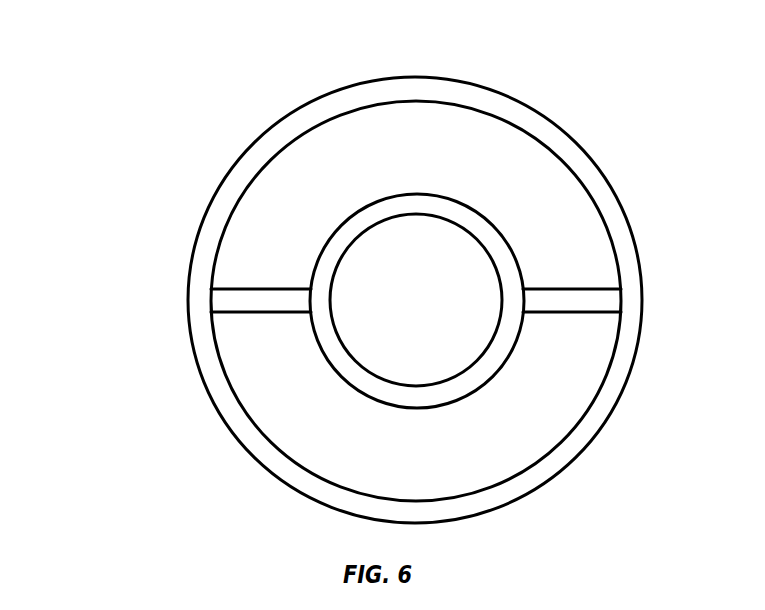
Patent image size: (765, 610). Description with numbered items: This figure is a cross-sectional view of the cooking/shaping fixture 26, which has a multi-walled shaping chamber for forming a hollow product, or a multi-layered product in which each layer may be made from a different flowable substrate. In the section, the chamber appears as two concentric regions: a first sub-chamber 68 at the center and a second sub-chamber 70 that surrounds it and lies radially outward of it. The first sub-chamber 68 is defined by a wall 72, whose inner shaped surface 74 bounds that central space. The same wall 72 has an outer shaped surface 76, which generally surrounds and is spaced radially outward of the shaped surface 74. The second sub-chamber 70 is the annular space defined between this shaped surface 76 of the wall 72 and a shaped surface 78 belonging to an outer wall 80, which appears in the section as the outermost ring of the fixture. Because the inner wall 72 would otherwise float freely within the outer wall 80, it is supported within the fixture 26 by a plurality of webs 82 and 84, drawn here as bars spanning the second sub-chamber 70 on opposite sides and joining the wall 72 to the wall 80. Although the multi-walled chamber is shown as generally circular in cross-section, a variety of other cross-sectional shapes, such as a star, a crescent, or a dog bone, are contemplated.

The fixture 26 is at (115, 117).
The first sub-chamber 68 is at (430, 316).
The second sub-chamber 70 is at (483, 452).
The wall 72 is at (497, 248).
The shaped surface 74 is at (333, 272).
The shaped surface 76 is at (457, 200).
The shaped surface 78 is at (395, 102).
The wall 80 is at (290, 130).
The web 82 is at (242, 288).
The web 84 is at (588, 288).